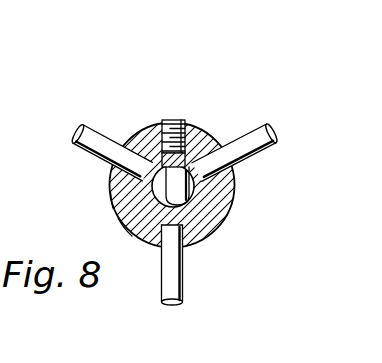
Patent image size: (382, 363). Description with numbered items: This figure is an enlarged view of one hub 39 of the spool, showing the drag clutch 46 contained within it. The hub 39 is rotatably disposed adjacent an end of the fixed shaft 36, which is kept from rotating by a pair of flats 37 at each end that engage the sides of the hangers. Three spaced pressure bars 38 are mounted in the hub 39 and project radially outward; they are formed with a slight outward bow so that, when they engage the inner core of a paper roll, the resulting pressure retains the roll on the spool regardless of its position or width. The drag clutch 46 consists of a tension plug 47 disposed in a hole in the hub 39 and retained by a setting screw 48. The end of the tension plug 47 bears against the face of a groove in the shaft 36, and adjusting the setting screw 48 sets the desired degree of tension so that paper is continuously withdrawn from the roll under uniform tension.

The fixed shaft 36 is at (236, 206).
The flats 37 is at (128, 229).
The pressure bars 38 is at (276, 134).
The hub 39 is at (228, 192).
The drag clutch 46 is at (177, 186).
The tension plug 47 is at (113, 201).
The setting screw 48 is at (172, 122).